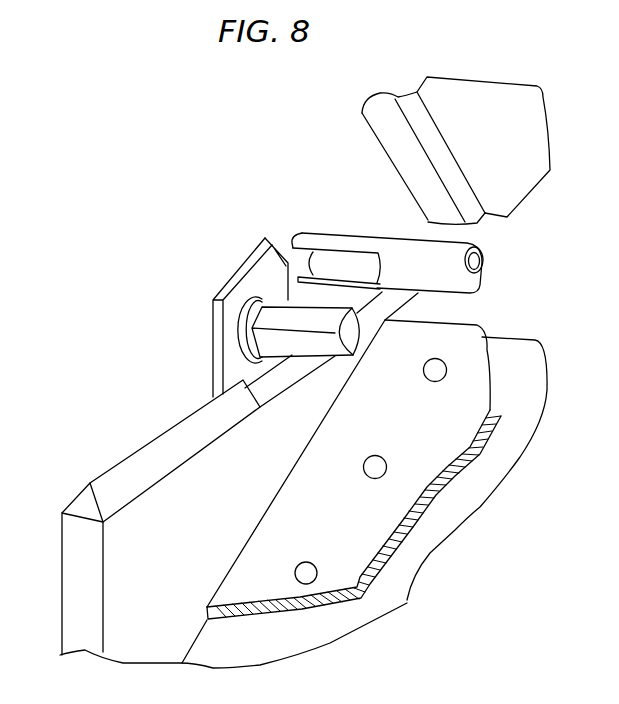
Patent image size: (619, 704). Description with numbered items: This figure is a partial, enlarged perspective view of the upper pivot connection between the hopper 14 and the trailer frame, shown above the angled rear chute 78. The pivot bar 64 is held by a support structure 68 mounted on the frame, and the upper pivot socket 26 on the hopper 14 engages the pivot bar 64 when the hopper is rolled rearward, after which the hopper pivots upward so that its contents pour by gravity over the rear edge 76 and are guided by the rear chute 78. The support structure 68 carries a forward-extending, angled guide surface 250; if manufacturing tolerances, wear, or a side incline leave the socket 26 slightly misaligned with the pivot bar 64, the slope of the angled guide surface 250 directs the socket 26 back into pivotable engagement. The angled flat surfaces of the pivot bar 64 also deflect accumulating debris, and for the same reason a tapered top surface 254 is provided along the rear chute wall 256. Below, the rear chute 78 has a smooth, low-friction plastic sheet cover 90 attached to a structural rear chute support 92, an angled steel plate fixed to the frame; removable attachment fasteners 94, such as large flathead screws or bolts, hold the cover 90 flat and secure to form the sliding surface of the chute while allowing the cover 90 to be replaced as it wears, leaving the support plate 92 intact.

The hopper 14 is at (378, 120).
The upper pivot socket 26 is at (343, 268).
The rear edge 76 is at (463, 279).
The support structure 68 is at (212, 368).
The angled guide surface 250 is at (268, 240).
The pivot bar 64 is at (354, 342).
The tapered top surface 254 is at (162, 446).
The rear chute wall 256 is at (150, 510).
The rear chute 78 is at (513, 445).
The plastic sheet cover 90 is at (408, 478).
The rear chute support 92 is at (392, 597).
The attachment fasteners 94 is at (430, 378).